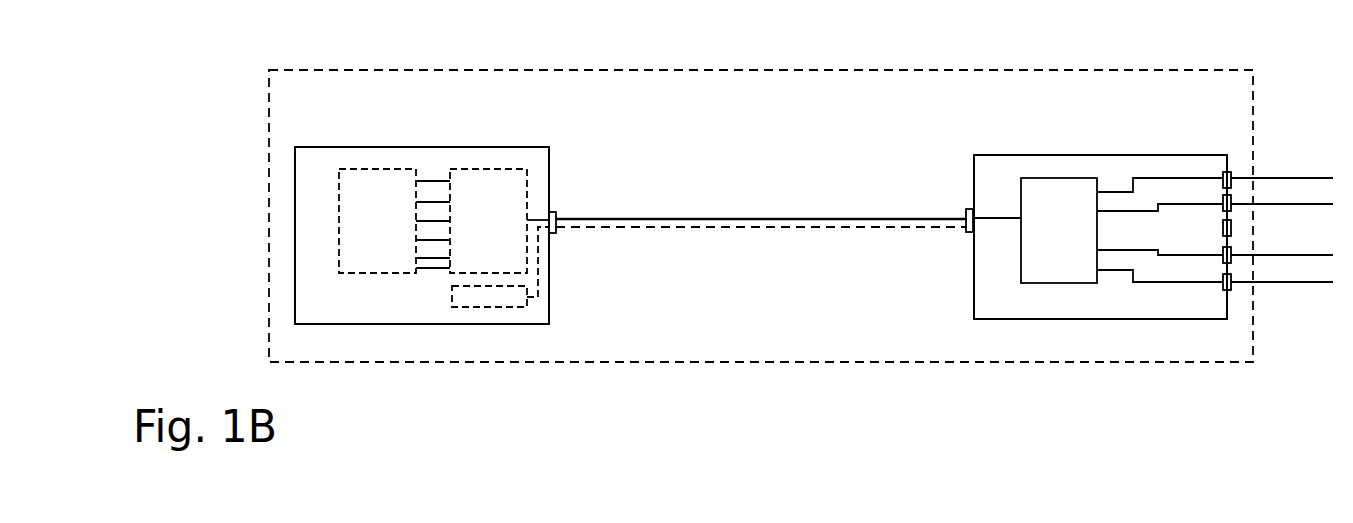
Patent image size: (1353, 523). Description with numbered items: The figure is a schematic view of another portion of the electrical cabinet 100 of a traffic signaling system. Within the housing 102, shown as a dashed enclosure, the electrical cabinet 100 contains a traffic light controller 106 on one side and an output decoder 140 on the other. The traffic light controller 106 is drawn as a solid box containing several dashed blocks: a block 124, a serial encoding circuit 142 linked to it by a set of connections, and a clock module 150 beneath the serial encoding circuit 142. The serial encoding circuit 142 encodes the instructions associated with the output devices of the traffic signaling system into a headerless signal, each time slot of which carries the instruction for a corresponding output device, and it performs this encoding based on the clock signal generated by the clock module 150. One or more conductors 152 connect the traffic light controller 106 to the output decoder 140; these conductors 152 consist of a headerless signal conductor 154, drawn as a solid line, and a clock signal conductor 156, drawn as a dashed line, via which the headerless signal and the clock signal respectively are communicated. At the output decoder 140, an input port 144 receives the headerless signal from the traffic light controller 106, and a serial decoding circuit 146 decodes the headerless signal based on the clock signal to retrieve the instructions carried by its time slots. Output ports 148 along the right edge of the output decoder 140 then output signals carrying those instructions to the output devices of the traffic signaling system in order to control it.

The electrical cabinet 100 is at (240, 96).
The housing 102 is at (700, 70).
The traffic light controller 106 is at (325, 135).
The processor 124 is at (376, 168).
The serial encoding circuit 142 is at (490, 168).
The clock module 150 is at (490, 307).
The conductors 152 is at (712, 170).
The headerless signal conductor 154 is at (732, 219).
The clock signal conductor 156 is at (757, 227).
The input port 144 is at (965, 213).
The output decoder 140 is at (1056, 155).
The serial decoding circuit 146 is at (1060, 284).
The output ports 148 is at (1231, 180).